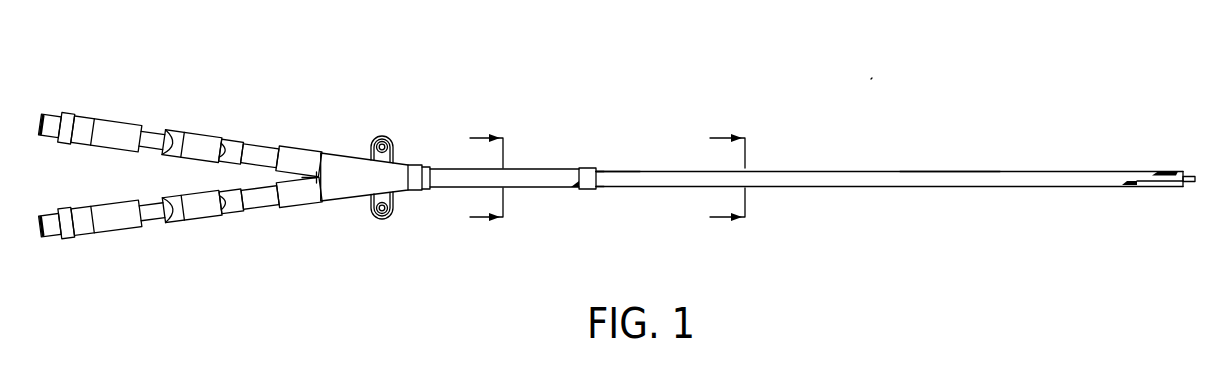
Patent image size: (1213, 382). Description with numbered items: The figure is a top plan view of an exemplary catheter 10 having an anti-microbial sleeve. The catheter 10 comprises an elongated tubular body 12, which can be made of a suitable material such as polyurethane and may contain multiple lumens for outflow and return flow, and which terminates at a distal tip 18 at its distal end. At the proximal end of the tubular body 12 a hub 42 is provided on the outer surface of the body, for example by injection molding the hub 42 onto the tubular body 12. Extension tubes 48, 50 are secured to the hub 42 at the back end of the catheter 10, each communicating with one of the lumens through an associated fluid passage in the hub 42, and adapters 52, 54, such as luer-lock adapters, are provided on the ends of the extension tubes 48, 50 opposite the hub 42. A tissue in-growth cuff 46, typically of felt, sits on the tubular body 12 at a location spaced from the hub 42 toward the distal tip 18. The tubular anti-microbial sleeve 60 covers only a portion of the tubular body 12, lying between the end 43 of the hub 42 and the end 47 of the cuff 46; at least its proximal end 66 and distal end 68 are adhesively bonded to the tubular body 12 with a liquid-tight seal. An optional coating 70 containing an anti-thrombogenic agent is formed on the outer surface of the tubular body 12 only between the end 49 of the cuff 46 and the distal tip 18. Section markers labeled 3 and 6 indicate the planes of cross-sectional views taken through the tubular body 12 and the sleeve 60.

The catheter 10 is at (878, 75).
The tubular body 12 is at (796, 198).
The distal tip 18 is at (1149, 171).
The hub 42 is at (346, 167).
The end of the hub 43 is at (431, 192).
The tissue in-growth cuff 46 is at (590, 190).
The end of the cuff 47 is at (575, 188).
The extension tube 48 is at (157, 132).
The end of the cuff 49 is at (599, 170).
The extension tube 50 is at (156, 226).
The adapter 52 is at (117, 122).
The adapter 54 is at (116, 231).
The anti-microbial sleeve 60 is at (550, 168).
The proximal end of the sleeve 66 is at (431, 163).
The distal end of the sleeve 68 is at (578, 168).
The coating 70 is at (949, 171).
The section line 3- 3 is at (721, 178).
The section line 6- 6 is at (480, 178).